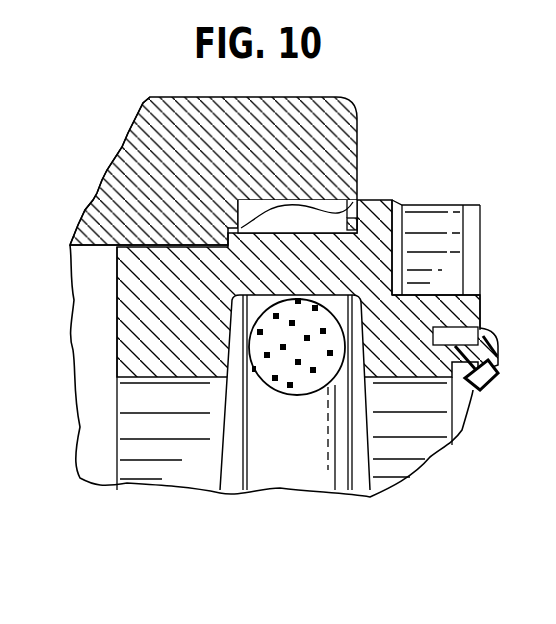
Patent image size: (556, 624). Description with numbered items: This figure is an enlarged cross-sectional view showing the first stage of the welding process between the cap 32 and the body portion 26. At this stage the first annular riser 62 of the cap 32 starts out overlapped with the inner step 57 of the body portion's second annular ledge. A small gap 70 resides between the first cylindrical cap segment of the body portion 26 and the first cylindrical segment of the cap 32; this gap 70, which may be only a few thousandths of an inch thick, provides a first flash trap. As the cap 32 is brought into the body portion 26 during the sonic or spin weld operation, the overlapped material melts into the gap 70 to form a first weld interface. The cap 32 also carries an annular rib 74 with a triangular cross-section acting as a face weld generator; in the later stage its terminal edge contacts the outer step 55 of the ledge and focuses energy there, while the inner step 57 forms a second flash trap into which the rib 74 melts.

The body portion 26 is at (118, 123).
The cap 32 is at (497, 302).
The outer step 55 is at (241, 215).
The inner step 57 is at (357, 200).
The first annular riser 62 is at (92, 207).
The gap 70 is at (73, 238).
The annular rib 74 is at (347, 223).